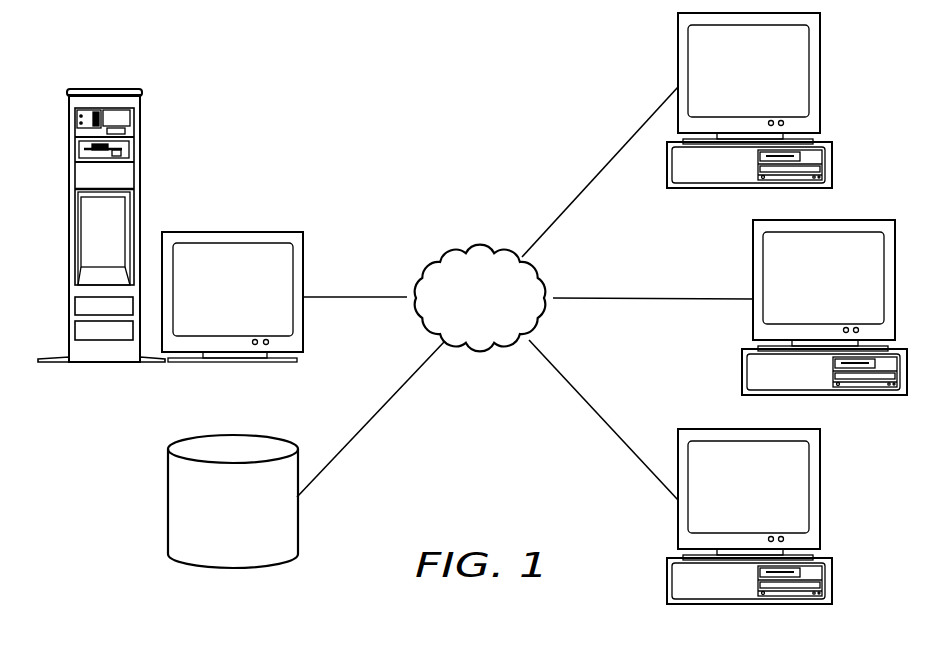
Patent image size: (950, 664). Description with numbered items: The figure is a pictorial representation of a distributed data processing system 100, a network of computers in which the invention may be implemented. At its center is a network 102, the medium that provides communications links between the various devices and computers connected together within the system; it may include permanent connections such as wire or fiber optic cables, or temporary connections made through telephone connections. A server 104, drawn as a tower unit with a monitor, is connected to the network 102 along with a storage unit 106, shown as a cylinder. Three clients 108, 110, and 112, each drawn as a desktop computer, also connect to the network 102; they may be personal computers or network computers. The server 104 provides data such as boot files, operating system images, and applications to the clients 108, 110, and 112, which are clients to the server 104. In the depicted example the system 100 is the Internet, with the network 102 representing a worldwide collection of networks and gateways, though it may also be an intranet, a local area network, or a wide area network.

The distributed data processing system 100 is at (370, 60).
The network 102 is at (459, 328).
The server 104 is at (214, 299).
The storage unit 106 is at (211, 545).
The client 108 is at (729, 83).
The client 110 is at (804, 291).
The client 112 is at (729, 501).